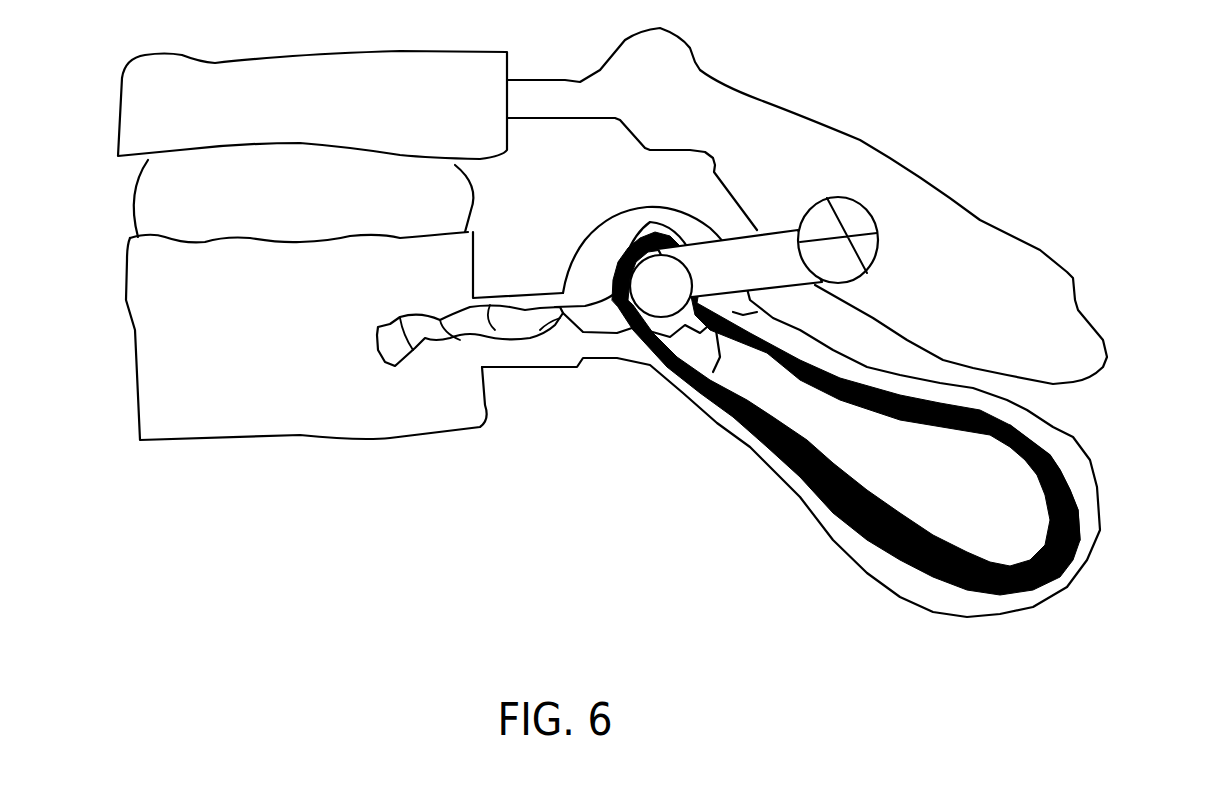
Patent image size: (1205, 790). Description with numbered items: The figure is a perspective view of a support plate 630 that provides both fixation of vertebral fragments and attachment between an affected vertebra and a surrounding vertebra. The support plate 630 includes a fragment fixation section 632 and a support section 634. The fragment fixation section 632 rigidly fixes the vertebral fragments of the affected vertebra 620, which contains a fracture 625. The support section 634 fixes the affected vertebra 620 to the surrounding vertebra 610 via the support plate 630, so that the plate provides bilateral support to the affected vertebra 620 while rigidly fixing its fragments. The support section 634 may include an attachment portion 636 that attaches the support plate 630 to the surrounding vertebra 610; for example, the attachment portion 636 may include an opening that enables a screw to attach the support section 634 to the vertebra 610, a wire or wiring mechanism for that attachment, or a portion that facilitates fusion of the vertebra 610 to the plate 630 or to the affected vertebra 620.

The surrounding vertebra 610 is at (1040, 275).
The affected vertebra 620 is at (1083, 570).
The fracture 625 is at (707, 395).
The support plate 630 is at (1002, 597).
The fragment fixation section 632 is at (1072, 492).
The support section 634 is at (850, 198).
The attachment portion 636 is at (825, 197).